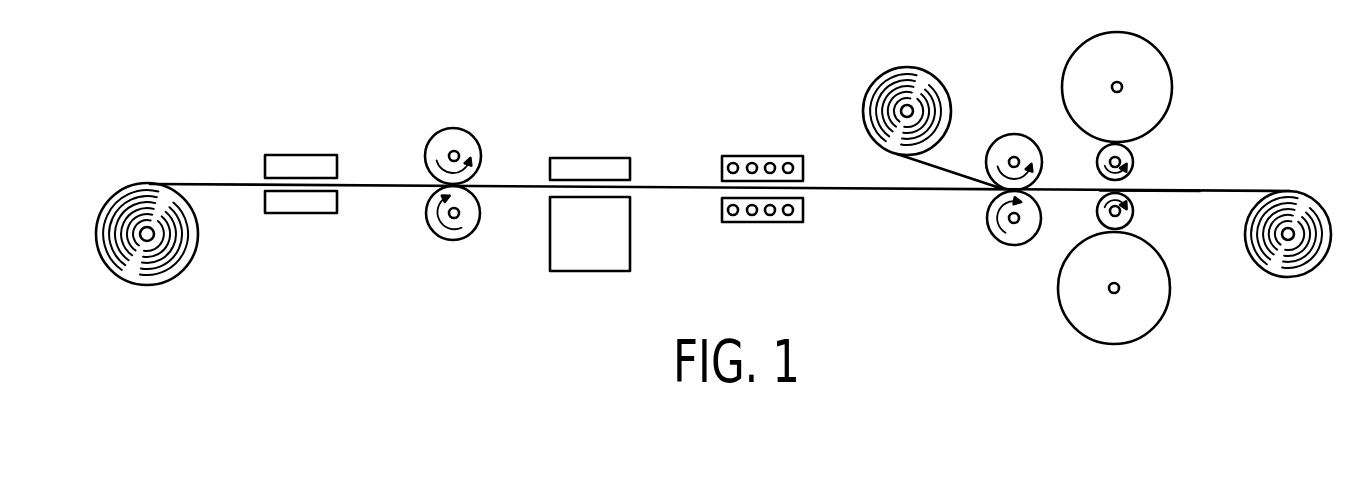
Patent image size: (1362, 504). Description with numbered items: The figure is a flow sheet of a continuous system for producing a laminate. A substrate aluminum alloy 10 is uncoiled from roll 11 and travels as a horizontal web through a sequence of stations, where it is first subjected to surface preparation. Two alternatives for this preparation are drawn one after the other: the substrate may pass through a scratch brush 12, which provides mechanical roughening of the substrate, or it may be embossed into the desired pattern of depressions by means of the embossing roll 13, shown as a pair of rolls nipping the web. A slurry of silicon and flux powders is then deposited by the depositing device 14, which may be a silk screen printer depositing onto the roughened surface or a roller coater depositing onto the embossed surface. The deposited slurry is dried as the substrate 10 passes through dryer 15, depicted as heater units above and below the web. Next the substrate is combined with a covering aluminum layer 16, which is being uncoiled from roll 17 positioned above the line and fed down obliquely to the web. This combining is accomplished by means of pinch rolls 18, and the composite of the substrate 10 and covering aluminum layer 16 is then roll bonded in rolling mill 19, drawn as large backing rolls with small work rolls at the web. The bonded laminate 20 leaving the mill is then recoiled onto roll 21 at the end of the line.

The substrate aluminum alloy 10 is at (205, 184).
The roll 11 is at (122, 198).
The scratch brush 12 is at (300, 156).
The embossing roll 13 is at (430, 132).
The depositing device 14 is at (550, 258).
The dryer 15 is at (775, 222).
The covering aluminum layer 16 is at (950, 168).
The roll 17 is at (888, 72).
The pinch rolls 18 is at (1005, 232).
The rolling mill 19 is at (1158, 104).
The bonded laminate 20 is at (1203, 190).
The roll 21 is at (1322, 205).